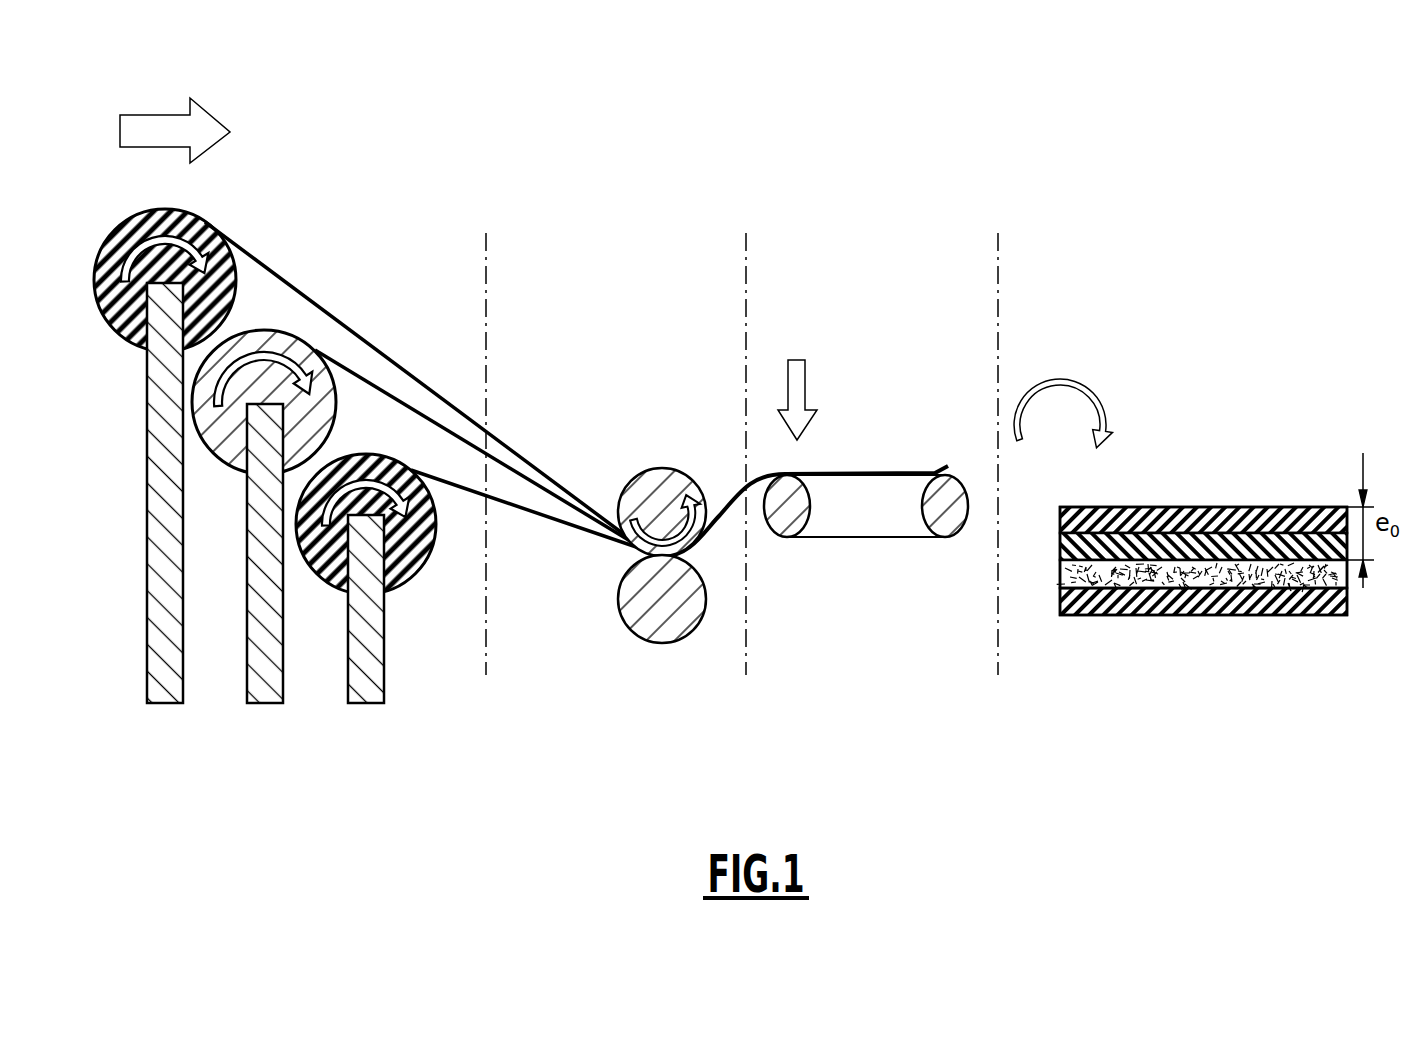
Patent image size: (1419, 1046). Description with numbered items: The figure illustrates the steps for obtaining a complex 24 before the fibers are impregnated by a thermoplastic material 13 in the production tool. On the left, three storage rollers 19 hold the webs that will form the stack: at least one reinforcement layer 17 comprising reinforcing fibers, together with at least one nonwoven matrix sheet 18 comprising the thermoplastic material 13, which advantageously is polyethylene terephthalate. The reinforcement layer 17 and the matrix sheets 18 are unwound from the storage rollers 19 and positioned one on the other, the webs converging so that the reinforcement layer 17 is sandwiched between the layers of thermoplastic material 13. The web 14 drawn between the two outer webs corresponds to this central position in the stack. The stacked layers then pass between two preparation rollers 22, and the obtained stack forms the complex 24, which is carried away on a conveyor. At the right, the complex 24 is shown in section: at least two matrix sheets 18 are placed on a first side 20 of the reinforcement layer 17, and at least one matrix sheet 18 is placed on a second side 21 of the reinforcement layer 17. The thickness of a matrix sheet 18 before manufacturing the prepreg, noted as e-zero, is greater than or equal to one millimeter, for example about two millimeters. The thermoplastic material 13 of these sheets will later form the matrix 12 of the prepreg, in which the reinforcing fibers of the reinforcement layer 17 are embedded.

The matrix 12 is at (1361, 619).
The thermoplastic material 13 is at (262, 262).
The middle web layer 14 is at (358, 372).
The reinforcement layer 17 is at (1060, 578).
The nonwoven matrix sheet 18 is at (1208, 532).
The storage rollers 19 is at (198, 224).
The first side 20 is at (1110, 545).
The second side 21 is at (1108, 600).
The preparation rollers 22 is at (665, 475).
The complex 24 is at (1316, 454).